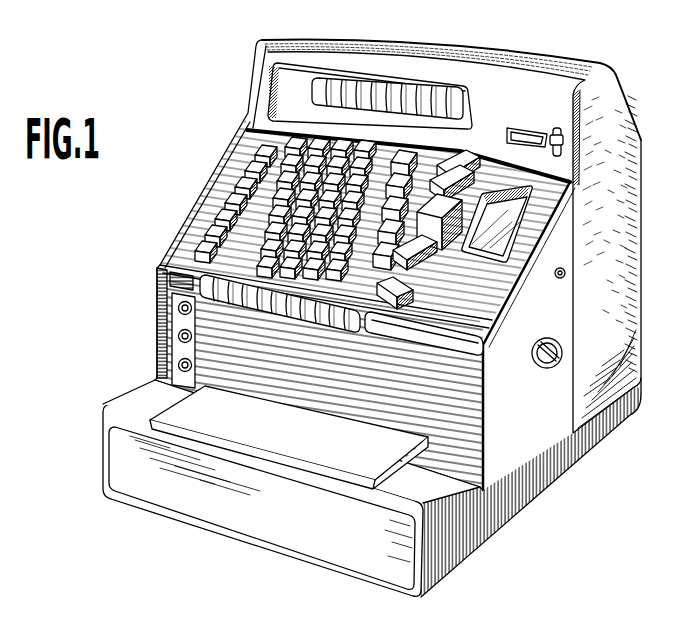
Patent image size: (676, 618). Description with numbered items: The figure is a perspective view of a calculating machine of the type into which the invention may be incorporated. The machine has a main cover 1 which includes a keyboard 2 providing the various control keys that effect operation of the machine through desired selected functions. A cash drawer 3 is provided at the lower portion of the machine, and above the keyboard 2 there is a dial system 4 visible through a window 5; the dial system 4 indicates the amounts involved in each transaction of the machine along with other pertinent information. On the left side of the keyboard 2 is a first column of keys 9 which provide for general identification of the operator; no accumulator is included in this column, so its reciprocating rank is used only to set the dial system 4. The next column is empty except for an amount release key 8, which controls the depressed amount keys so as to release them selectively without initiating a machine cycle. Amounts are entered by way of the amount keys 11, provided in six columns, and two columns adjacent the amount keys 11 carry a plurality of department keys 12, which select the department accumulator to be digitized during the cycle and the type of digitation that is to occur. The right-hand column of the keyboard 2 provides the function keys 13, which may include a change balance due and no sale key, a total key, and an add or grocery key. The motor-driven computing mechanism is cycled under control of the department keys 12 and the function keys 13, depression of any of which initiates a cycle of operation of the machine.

The main cover 1 is at (620, 166).
The keyboard 2 is at (216, 210).
The cash drawer 3 is at (320, 538).
The dial system 4 is at (454, 106).
The window 5 is at (292, 93).
The amount release key 8 is at (283, 136).
The first column of keys 9 is at (256, 149).
The amount keys 11 is at (243, 279).
The department keys 12 is at (370, 310).
The function keys 13 is at (458, 162).